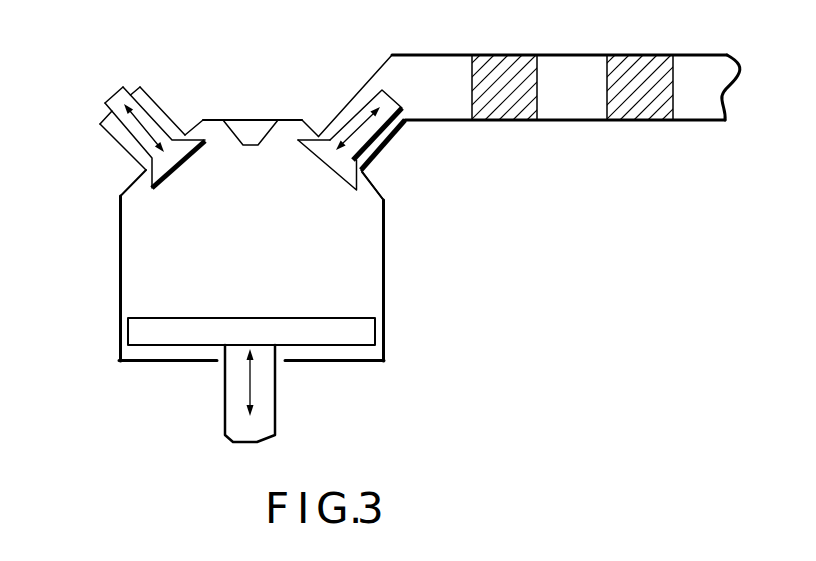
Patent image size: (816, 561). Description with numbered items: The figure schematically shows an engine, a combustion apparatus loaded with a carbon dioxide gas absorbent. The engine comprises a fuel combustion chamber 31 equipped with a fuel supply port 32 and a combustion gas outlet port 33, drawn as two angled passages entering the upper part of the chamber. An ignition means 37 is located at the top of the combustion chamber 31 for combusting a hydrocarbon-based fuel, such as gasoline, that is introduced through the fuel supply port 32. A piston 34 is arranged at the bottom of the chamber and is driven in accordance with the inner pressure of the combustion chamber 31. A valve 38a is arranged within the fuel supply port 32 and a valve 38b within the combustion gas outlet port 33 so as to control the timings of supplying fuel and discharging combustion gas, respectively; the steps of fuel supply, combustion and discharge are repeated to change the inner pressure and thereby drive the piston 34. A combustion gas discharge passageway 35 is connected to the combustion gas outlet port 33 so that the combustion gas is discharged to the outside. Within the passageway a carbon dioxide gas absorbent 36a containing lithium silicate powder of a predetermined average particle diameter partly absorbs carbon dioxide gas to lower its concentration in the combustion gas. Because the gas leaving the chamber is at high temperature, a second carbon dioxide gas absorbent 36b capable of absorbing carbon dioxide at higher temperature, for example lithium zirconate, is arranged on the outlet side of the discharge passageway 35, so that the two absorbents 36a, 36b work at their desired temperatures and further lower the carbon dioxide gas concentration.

The fuel combustion chamber 31 is at (118, 258).
The fuel supply port 32 is at (118, 144).
The combustion gas outlet port 33 is at (355, 98).
The piston 34 is at (378, 331).
The combustion gas discharge passageway 35 is at (435, 56).
The carbon dioxide gas absorbent 36a is at (503, 55).
The carbon dioxide gas absorbent 36b is at (638, 62).
The ignition means 37 is at (250, 127).
The valve 38a is at (121, 95).
The valve 38b is at (381, 90).